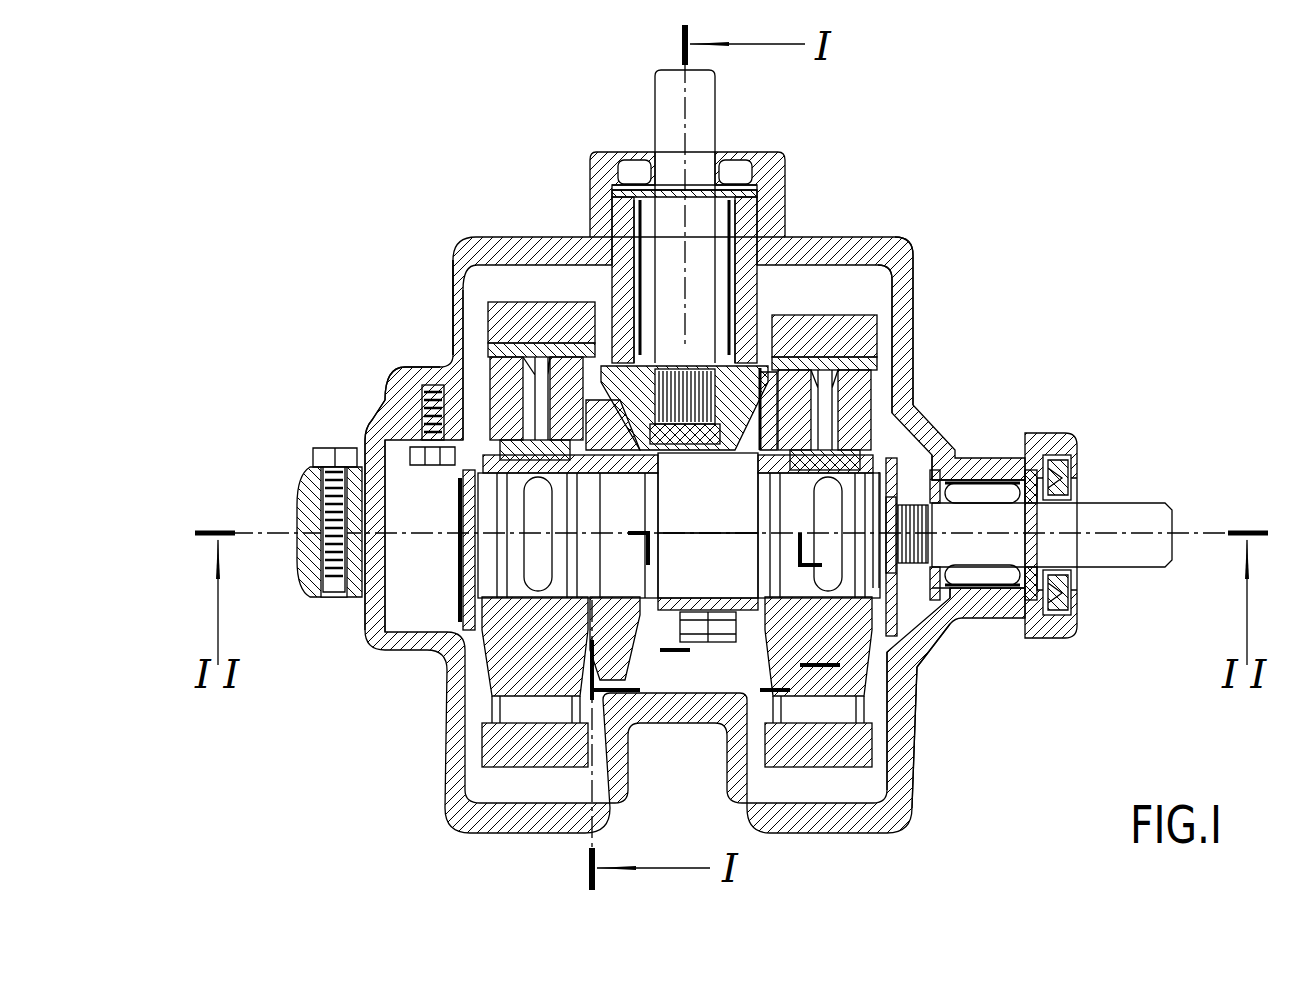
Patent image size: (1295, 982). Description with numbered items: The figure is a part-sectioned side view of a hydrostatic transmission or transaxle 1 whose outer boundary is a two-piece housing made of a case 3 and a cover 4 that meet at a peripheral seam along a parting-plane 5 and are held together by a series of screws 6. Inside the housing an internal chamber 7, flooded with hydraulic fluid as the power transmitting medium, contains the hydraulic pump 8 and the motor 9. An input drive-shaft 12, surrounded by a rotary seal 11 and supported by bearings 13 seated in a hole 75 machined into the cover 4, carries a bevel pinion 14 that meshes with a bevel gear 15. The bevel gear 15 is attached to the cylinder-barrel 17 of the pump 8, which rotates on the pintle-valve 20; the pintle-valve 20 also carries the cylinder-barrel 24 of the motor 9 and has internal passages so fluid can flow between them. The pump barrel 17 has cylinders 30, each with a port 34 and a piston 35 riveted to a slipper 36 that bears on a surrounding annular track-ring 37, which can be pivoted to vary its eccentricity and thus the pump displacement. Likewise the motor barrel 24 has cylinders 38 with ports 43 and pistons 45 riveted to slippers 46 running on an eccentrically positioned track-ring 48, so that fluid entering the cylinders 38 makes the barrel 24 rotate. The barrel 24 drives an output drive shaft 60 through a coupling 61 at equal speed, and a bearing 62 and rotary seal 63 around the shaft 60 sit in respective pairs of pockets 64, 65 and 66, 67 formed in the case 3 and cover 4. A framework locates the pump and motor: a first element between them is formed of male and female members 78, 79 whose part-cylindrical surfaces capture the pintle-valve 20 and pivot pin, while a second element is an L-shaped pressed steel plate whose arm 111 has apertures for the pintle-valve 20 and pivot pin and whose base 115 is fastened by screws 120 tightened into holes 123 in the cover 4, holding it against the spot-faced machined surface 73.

The hydrostatic transmission 1 is at (1086, 113).
The case 3 is at (310, 565).
The cover 4 is at (308, 502).
The parting-plane 5 is at (262, 528).
The screws 6 is at (322, 447).
The internal chamber 7 is at (822, 300).
The hydraulic pump 8 is at (428, 593).
The motor 9 is at (933, 703).
The rotary seal 11 is at (735, 158).
The input drive-shaft 12 is at (663, 100).
The bearings 13 is at (757, 255).
The bevel pinion 14 is at (812, 287).
The bevel gear 15 is at (620, 680).
The cylinder-barrel 17 is at (512, 648).
The pintle-valve 20 is at (638, 510).
The cylinder-barrel 24 is at (820, 677).
The cylinders 30 is at (493, 405).
The port 34 is at (455, 372).
The piston 35 is at (560, 345).
The slipper 36 is at (485, 365).
The track-ring 37 is at (528, 320).
The cylinders 38 is at (870, 393).
The port 43 is at (888, 470).
The piston 45 is at (830, 340).
The slipper 46 is at (900, 275).
The track-ring 48 is at (880, 270).
The output drive shaft 60 is at (1123, 553).
The coupling 61 is at (922, 700).
The bearing 62 is at (1000, 590).
The rotary seal 63 is at (1073, 483).
The pocket 64 is at (978, 590).
The pocket 65 is at (985, 480).
The pocket 66 is at (1072, 625).
The pocket 67 is at (1072, 442).
The machined surface 73 is at (373, 433).
The hole 75 is at (640, 270).
The male member 78 is at (727, 504).
The female member 79 is at (734, 576).
The arm 111 is at (462, 610).
The base 115 is at (383, 440).
The fastening screw 120 is at (428, 468).
The holes 123 is at (395, 420).